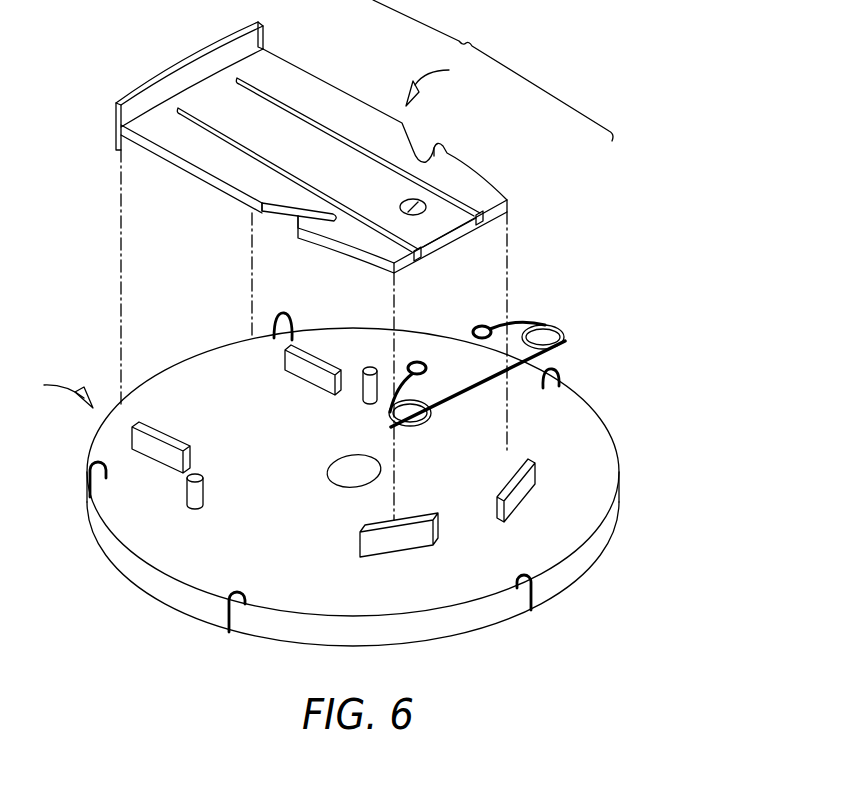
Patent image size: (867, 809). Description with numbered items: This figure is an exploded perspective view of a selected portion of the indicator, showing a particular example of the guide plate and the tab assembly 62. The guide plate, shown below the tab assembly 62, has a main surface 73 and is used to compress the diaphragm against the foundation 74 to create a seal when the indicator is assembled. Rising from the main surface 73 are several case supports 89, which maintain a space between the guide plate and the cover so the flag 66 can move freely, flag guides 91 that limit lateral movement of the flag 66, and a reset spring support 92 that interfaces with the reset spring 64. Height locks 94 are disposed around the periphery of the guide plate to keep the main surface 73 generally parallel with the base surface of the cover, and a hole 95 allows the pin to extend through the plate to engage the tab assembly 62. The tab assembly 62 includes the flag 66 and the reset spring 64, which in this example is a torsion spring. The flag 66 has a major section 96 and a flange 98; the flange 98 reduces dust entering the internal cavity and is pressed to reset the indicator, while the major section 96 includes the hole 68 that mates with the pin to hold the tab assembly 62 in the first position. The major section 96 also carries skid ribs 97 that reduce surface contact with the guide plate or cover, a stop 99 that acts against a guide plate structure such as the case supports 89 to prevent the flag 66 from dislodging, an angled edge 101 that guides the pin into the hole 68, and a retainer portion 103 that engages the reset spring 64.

The tab assembly 62 is at (493, 70).
The reset spring 64 is at (567, 338).
The flag 66 is at (440, 81).
The hole 68 is at (410, 200).
The main surface 73 is at (592, 447).
The foundation 74 is at (55, 390).
The case supports 89 is at (370, 367).
The flag guides 91 is at (285, 360).
The reset spring support 92 is at (360, 541).
The height locks 94 is at (278, 316).
The hole 95 is at (338, 472).
The major section 96 is at (338, 103).
The skid ribs 97 is at (265, 90).
The flange 98 is at (178, 50).
The stop 99 is at (292, 227).
The angled edge 101 is at (453, 236).
The retainer portion 103 is at (425, 257).